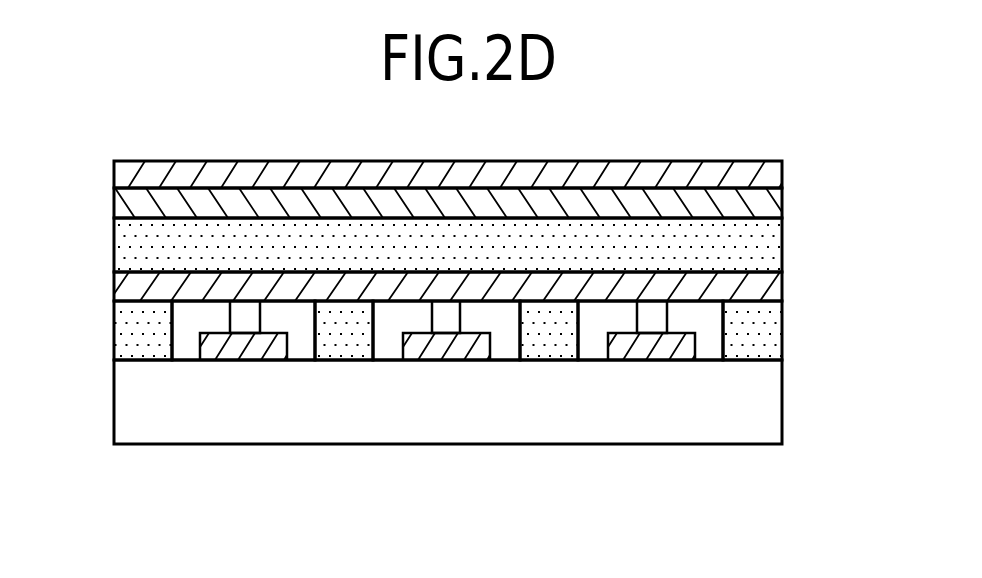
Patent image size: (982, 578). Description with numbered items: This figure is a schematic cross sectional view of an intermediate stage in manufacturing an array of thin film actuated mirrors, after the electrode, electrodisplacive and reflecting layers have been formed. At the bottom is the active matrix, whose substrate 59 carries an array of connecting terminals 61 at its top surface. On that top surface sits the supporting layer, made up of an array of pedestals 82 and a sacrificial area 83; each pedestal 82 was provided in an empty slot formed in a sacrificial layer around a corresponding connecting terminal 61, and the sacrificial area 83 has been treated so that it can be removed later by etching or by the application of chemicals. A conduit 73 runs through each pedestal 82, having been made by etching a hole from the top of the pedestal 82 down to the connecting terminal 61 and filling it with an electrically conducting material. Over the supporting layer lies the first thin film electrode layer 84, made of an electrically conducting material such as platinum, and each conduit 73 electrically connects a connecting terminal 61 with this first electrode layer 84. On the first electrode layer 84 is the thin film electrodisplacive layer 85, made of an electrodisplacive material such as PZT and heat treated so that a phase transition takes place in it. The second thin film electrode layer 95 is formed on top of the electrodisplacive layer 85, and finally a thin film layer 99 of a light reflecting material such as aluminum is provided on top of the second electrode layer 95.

The substrate 59 is at (530, 413).
The connecting terminal 61 is at (263, 352).
The conduit 73 is at (243, 318).
The pedestal 82 is at (300, 340).
The sacrificial area 83 is at (125, 335).
The first thin film electrode layer 84 is at (753, 283).
The thin film electrodisplacive layer 85 is at (748, 247).
The second thin film electrode layer 95 is at (760, 202).
The thin film layer 99 is at (765, 175).